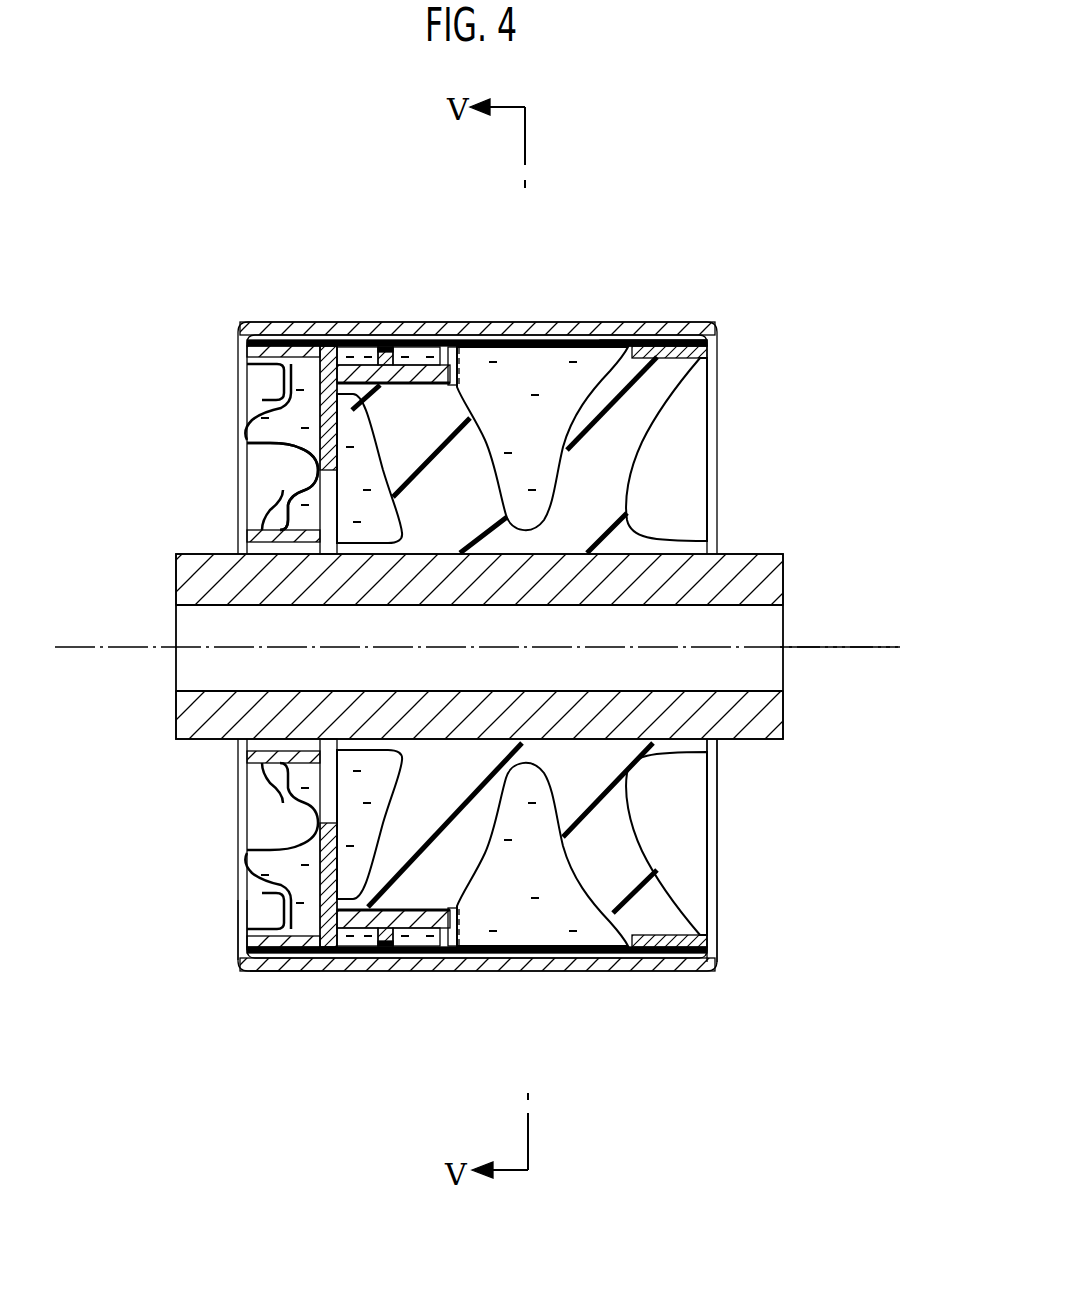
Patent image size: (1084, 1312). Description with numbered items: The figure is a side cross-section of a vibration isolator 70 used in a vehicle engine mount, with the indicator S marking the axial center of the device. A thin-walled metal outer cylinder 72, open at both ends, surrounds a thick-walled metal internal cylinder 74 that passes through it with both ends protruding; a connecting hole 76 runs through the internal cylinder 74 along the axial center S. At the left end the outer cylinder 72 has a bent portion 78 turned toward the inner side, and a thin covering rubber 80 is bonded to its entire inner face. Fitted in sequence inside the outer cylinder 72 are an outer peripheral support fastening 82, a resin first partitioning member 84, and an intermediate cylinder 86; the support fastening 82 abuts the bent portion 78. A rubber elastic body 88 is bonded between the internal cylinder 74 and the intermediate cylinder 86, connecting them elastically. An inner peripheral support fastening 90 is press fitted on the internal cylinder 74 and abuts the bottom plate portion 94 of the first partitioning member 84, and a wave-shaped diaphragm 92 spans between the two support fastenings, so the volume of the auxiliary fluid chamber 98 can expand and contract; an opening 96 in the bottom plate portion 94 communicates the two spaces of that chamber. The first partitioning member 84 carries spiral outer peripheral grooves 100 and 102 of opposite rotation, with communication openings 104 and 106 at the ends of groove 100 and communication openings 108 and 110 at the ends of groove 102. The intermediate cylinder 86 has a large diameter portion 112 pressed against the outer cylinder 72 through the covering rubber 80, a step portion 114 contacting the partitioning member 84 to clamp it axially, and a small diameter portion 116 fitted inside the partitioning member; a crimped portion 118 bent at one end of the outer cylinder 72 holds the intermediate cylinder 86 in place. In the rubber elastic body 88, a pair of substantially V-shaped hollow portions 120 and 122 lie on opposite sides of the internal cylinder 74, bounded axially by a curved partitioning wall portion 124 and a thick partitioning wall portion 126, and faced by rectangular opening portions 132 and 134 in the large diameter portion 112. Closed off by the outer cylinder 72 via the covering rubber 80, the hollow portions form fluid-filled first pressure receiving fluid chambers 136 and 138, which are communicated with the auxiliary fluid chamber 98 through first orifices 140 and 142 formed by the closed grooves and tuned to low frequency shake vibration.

The vibration isolator 70 is at (776, 239).
The outer cylinder 72 is at (513, 322).
The internal cylinder 74 is at (786, 573).
The connecting hole 76 is at (747, 691).
The bent portion 78 is at (242, 930).
The covering rubber 80 is at (598, 343).
The outer peripheral support fastening 82 is at (278, 970).
The first partitioning member 84 is at (385, 946).
The intermediate cylinder 86 is at (703, 352).
The rubber elastic body 88 is at (671, 434).
The inner peripheral support fastening 90 is at (250, 747).
The diaphragm 92 is at (262, 452).
The bottom plate portion 94 is at (327, 853).
The opening 96 is at (320, 488).
The auxiliary fluid chamber 98 is at (292, 415).
The outer peripheral groove 100 is at (388, 350).
The outer peripheral groove 102 is at (415, 946).
The communication opening 104 is at (452, 350).
The communication opening 106 is at (337, 946).
The communication opening 108 is at (457, 947).
The communication opening 110 is at (318, 346).
The large diameter portion 112 is at (670, 960).
The step portion 114 is at (459, 385).
The small diameter portion 116 is at (420, 907).
The crimped portion 118 is at (720, 955).
The hollow portion 120 is at (600, 385).
The hollow portion 122 is at (588, 893).
The partitioning wall portion 124 is at (640, 845).
The partitioning wall portion 126 is at (473, 845).
The opening portion 132 is at (612, 343).
The opening portion 134 is at (622, 946).
The first pressure receiving fluid chamber 136 is at (547, 363).
The first pressure receiving fluid chamber 138 is at (528, 918).
The first orifice 140 is at (413, 350).
The first orifice 142 is at (353, 350).
The axial center S is at (862, 648).